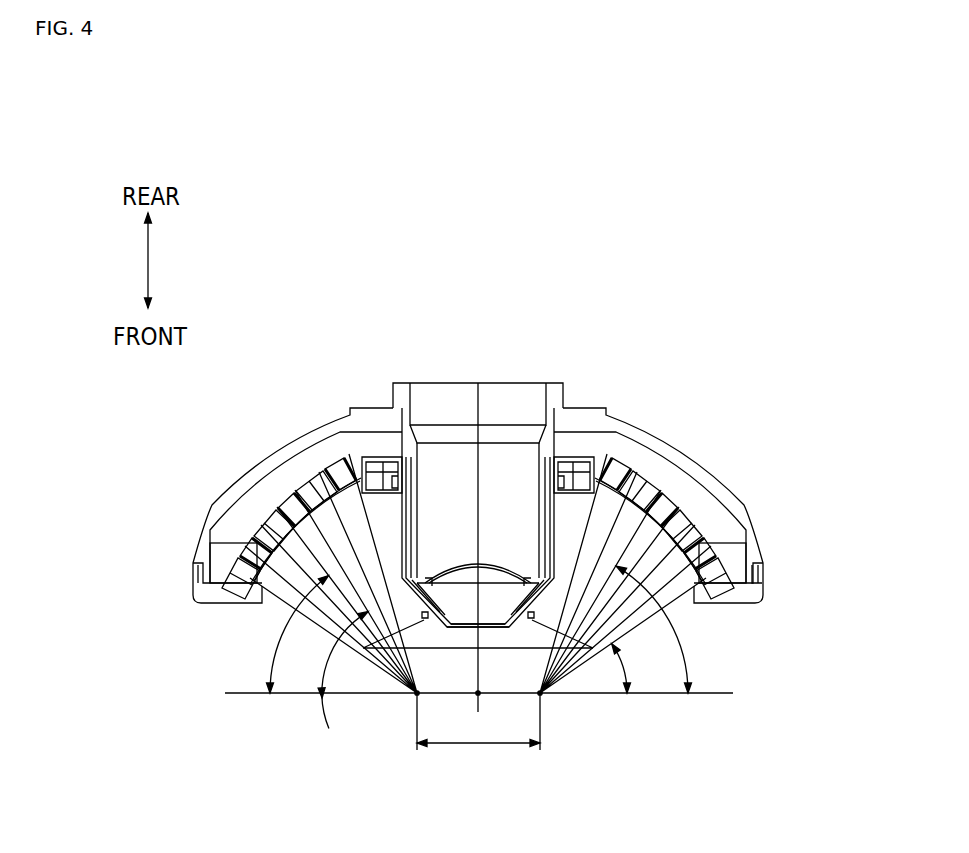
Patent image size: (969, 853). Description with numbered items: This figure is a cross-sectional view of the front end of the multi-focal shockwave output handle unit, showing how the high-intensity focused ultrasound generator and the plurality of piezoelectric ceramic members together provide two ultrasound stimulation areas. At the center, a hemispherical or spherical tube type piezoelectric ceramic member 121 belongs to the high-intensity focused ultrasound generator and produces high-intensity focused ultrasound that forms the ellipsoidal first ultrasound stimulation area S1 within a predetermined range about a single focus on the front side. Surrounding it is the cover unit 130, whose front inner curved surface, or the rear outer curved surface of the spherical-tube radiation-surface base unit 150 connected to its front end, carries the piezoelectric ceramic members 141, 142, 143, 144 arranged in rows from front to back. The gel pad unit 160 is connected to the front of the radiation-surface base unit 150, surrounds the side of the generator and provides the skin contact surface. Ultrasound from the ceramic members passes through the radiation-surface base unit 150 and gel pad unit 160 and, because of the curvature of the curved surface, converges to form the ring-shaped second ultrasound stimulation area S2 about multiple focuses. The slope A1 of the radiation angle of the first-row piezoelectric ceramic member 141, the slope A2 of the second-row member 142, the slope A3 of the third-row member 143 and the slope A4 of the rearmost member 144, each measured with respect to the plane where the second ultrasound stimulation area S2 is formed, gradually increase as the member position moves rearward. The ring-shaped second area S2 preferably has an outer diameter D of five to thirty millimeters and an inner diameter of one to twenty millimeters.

The piezoelectric ceramic member 121 is at (448, 562).
The cover unit 130 is at (686, 451).
The first-row piezoelectric ceramic member 141 is at (712, 528).
The second-row piezoelectric ceramic member 142 is at (282, 515).
The third-row piezoelectric ceramic member 143 is at (303, 490).
The fourth-row piezoelectric ceramic member 144 is at (606, 463).
The radiation-surface base unit 150 is at (765, 583).
The gel pad unit 160 is at (243, 567).
The first ultrasound stimulation area S1 is at (481, 695).
The second ultrasound stimulation area S2 is at (417, 694).
The outer diameter D is at (478, 734).
The slope of ultrasound radiation angle of first-row piezoelectric ceramic member A1 is at (635, 668).
The slope of ultrasound radiation angle of second-row piezoelectric ceramic member A2 is at (334, 670).
The slope of ultrasound radiation angle of third-row piezoelectric ceramic member A3 is at (290, 634).
The slope of ultrasound radiation angle of fourth-row piezoelectric ceramic member A4 is at (665, 629).